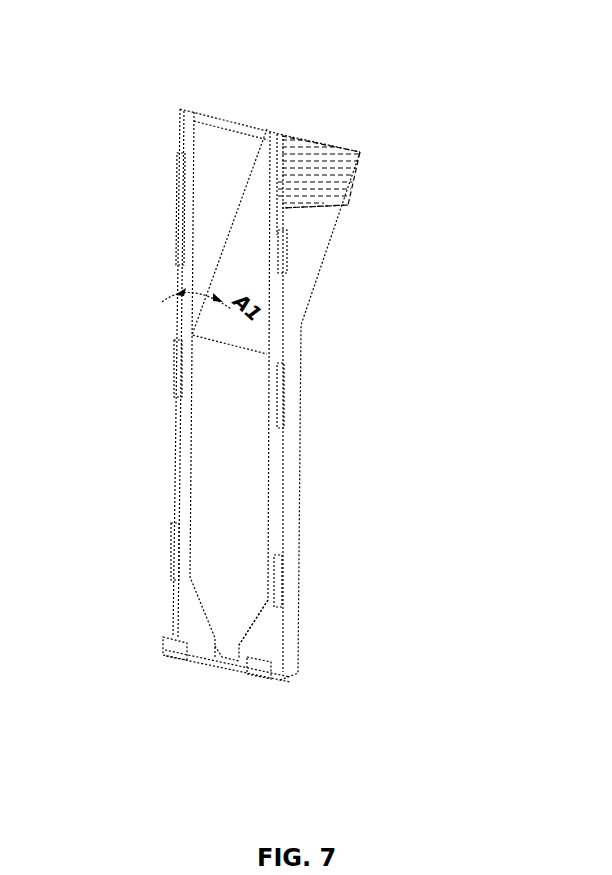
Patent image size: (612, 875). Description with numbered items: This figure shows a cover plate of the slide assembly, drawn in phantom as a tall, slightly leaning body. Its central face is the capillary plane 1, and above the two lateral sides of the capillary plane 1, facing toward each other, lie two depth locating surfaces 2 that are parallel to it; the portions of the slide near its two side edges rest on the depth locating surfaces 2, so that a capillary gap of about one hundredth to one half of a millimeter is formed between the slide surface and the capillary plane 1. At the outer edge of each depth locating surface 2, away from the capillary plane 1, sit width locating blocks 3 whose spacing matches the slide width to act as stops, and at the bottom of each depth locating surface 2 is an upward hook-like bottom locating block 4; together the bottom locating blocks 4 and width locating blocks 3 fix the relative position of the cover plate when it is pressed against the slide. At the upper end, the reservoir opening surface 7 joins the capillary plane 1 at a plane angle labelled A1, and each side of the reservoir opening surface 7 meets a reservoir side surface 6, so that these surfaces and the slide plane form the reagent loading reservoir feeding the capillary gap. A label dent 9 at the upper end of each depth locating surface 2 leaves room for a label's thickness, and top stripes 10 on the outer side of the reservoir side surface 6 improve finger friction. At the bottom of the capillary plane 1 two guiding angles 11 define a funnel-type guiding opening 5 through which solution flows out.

The capillary plane 1 is at (257, 508).
The depth locating surface 2 is at (177, 433).
The width locating block 3 is at (168, 553).
The bottom locating block 4 is at (165, 650).
The funnel-type guiding opening 5 is at (227, 660).
The reservoir side surface 6 is at (221, 153).
The reservoir opening surface 7 is at (249, 225).
The label dent 9 is at (280, 273).
The top stripes 10 is at (322, 147).
The guiding angle 11 is at (265, 630).